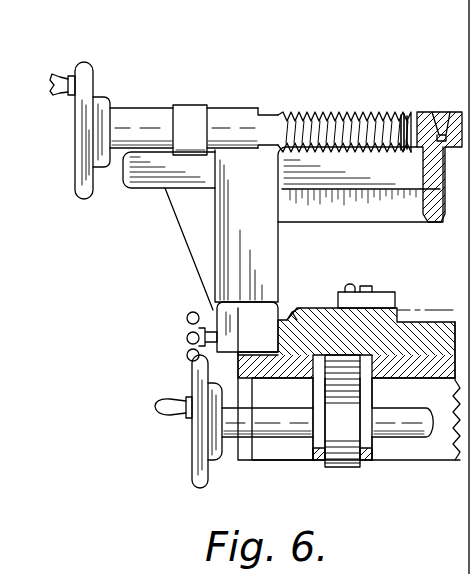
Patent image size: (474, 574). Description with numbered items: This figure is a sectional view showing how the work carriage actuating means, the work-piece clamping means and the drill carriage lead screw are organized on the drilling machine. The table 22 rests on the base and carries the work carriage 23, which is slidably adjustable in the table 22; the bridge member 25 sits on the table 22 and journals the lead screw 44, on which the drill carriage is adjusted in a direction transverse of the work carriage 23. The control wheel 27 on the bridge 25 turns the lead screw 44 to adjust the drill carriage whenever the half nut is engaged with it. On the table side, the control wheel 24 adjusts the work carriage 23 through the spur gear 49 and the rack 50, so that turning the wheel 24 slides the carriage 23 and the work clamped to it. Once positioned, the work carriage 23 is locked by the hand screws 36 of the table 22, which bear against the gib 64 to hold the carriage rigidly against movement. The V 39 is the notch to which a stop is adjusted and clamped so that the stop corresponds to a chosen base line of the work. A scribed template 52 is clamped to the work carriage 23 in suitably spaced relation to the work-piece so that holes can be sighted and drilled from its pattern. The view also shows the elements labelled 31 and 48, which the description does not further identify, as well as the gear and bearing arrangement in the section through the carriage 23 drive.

The control wheel 27 is at (95, 71).
The lead screw 44 is at (351, 112).
The V 39 is at (430, 120).
The bridge member 25 is at (412, 226).
The gib 64 is at (275, 350).
The spur gear 49 is at (309, 312).
The work carriage 23 is at (318, 312).
The clamp screw 31 is at (378, 292).
The template 52 is at (438, 318).
The hand screws 36 is at (188, 315).
The control wheel 24 is at (203, 375).
The rack 50 is at (378, 375).
The gear 48 is at (341, 468).
The table 22 is at (440, 455).